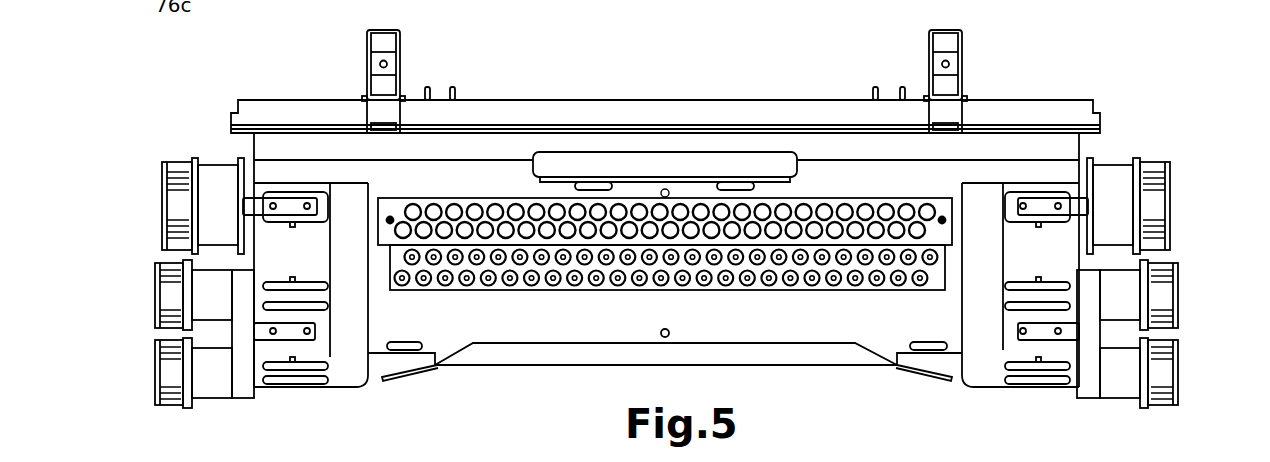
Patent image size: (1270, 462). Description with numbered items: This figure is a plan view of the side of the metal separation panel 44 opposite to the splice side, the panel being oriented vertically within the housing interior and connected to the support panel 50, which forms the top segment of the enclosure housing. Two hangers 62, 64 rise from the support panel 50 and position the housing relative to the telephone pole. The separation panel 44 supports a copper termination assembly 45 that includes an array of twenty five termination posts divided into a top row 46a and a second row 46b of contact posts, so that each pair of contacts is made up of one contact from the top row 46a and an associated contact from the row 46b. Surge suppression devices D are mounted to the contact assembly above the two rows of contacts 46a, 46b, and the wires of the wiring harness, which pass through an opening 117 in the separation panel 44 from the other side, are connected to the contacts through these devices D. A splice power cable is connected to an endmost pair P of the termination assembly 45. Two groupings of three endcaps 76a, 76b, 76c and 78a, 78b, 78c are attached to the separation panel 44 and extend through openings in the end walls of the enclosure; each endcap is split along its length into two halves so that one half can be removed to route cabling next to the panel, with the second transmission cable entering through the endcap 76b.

The separation panel 44 is at (798, 318).
The termination assembly 45 is at (585, 312).
The top row of contact posts 46a is at (966, 254).
The second row of contact posts 46b is at (948, 284).
The support panel 50 is at (598, 108).
The hanger 62 is at (945, 42).
The hanger 64 is at (383, 42).
The endcap 76a is at (1115, 180).
The endcap 76b is at (1120, 292).
The endcap 76c is at (1125, 370).
The endcap 78a is at (222, 178).
The endcap 78b is at (210, 298).
The endcap 78c is at (210, 370).
The opening 117 is at (692, 150).
The surge suppression devices D is at (535, 207).
The endmost pair P is at (908, 296).